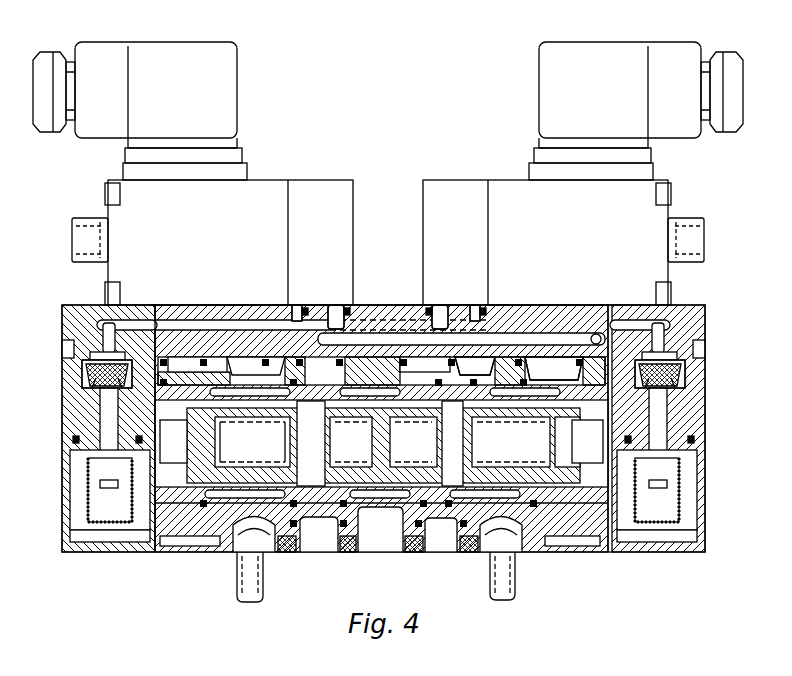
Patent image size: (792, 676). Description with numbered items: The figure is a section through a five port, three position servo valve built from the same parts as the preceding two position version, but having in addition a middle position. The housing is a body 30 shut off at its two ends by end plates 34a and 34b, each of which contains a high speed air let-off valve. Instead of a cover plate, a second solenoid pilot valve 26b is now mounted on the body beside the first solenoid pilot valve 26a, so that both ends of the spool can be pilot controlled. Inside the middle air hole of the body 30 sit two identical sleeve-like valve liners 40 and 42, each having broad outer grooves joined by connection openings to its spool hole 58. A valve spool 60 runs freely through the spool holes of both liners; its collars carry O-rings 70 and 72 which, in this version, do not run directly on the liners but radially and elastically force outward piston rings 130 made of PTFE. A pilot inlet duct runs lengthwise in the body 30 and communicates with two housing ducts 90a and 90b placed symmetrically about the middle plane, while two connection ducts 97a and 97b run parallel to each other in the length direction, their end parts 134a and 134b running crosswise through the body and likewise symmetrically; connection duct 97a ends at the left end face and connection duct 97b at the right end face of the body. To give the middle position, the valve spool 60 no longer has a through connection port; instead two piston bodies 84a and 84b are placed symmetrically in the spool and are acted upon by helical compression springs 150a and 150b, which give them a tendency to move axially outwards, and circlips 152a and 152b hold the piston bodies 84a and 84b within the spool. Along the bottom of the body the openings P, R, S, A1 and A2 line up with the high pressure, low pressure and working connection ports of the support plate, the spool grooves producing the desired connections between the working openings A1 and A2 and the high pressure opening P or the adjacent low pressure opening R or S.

The solenoid pilot valve 26a is at (268, 172).
The second solenoid pilot valve 26b is at (502, 172).
The body 30 is at (398, 318).
The end plate 34a is at (72, 315).
The end plate 34b is at (712, 318).
The valve liner 40 is at (381, 421).
The valve liner 42 is at (545, 355).
The spool hole 58 is at (486, 386).
The valve spool 60 is at (380, 363).
The O-ring 70 is at (436, 392).
The O-ring 72 is at (465, 392).
The piston body 84a is at (262, 417).
The piston body 84b is at (560, 440).
The housing duct 90a is at (335, 318).
The housing duct 90b is at (437, 318).
The connection duct 97a is at (180, 318).
The connection duct 97b is at (640, 318).
The piston ring 130 is at (446, 392).
The end part 134a is at (477, 318).
The end part 134b is at (293, 318).
The helical compression spring 150a is at (308, 424).
The helical compression spring 150b is at (507, 422).
The circlip 152a is at (172, 441).
The circlip 152b is at (560, 400).
The opening R is at (254, 535).
The opening A1 is at (319, 534).
The opening P is at (380, 529).
The opening A2 is at (441, 535).
The opening S is at (501, 535).